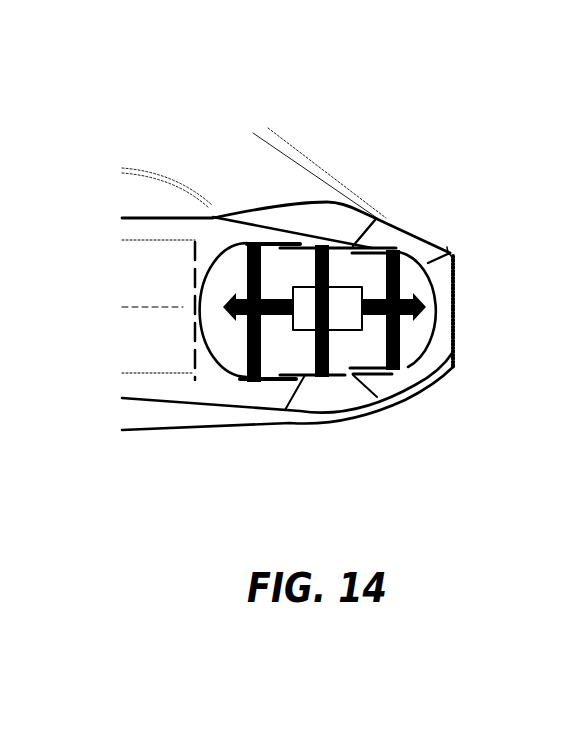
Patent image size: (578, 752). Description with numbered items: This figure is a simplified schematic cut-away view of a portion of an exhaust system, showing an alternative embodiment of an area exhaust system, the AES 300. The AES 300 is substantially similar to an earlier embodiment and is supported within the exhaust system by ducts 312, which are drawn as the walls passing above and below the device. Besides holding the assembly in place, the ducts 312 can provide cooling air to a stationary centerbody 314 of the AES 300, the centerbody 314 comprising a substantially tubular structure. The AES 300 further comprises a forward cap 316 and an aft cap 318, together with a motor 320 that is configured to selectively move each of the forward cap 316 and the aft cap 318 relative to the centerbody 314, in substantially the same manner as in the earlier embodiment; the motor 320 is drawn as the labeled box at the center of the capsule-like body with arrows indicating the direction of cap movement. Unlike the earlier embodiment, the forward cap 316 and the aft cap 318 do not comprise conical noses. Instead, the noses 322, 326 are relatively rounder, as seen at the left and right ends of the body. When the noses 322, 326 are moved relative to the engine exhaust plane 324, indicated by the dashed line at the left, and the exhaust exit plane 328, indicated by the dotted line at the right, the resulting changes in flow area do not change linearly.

The AES 300 is at (403, 144).
The ducts 312 is at (264, 227).
The stationary centerbody 314 is at (342, 376).
The forward cap 316 is at (210, 281).
The aft cap 318 is at (422, 351).
The motor 320 is at (350, 322).
The nose 322 is at (208, 357).
The engine exhaust plane 324 is at (197, 257).
The nose 326 is at (447, 247).
The exhaust exit plane 328 is at (453, 294).